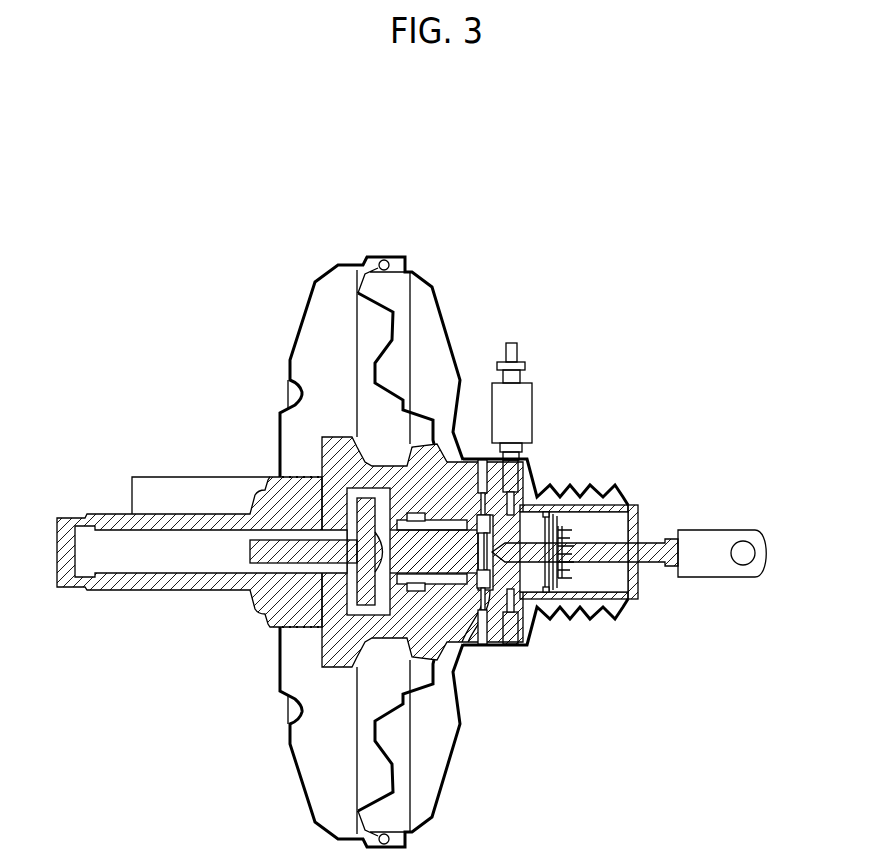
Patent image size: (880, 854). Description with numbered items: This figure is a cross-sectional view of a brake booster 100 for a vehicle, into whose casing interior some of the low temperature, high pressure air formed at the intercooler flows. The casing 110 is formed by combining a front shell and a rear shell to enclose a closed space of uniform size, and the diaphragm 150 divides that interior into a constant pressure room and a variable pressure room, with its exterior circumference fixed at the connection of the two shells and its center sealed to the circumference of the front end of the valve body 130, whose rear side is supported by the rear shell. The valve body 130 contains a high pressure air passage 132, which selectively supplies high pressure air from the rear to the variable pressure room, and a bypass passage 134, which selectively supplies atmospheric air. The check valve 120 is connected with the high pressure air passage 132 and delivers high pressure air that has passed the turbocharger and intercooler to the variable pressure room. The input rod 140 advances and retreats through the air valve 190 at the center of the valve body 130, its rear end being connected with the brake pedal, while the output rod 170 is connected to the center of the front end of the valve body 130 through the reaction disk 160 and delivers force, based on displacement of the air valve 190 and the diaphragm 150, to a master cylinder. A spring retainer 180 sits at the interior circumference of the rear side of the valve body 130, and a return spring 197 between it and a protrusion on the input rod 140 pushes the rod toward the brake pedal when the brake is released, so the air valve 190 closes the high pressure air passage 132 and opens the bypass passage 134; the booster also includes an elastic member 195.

The brake booster 100 is at (391, 185).
The casing 110 is at (432, 287).
The check valve 120 is at (528, 393).
The valve body 130 is at (612, 503).
The high pressure air passage 132 is at (510, 473).
The bypass passage 134 is at (477, 617).
The input rod 140 is at (715, 567).
The diaphragm 150 is at (393, 780).
The reaction disk 160 is at (365, 498).
The output rod 170 is at (243, 540).
The spring retainer 180 is at (560, 614).
The air valve 190 is at (393, 567).
The elastic member 195 is at (281, 633).
The return spring 197 is at (562, 575).